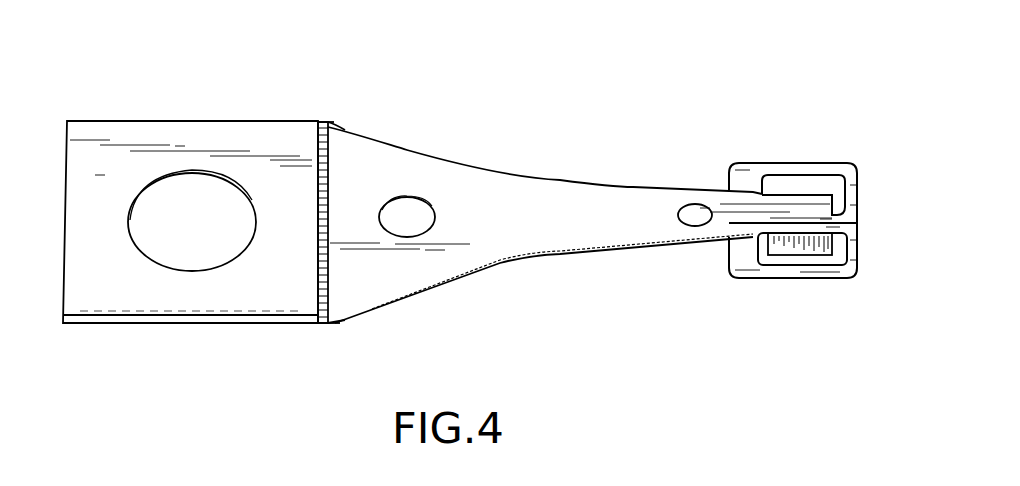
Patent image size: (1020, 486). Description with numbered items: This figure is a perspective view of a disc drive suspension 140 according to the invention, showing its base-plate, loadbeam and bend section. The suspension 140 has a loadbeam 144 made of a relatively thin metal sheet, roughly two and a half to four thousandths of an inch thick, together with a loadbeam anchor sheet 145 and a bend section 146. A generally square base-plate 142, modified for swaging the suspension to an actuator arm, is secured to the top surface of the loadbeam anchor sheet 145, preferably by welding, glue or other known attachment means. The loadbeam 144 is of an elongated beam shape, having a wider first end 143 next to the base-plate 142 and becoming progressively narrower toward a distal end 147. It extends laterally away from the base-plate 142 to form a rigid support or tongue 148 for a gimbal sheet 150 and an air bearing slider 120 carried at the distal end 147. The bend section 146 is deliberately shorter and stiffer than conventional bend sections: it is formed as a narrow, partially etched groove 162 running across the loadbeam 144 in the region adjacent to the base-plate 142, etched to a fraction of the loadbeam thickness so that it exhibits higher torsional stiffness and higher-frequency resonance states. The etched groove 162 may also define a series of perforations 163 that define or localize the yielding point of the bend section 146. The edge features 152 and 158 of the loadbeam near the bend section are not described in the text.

The suspension 140 is at (318, 83).
The base-plate 142 is at (122, 307).
The loadbeam anchor sheet 145 is at (215, 318).
The perforations 163 is at (318, 160).
The partially etched groove 162 is at (325, 130).
The bend section 146 is at (320, 327).
The first end 143 is at (328, 122).
The loadbeam 144 is at (432, 172).
The arm lower edge 152 is at (353, 303).
The arm lower corner 158 is at (333, 327).
The gimbal sheet 150 is at (752, 172).
The distal end 147 is at (857, 222).
The tongue 148 is at (728, 225).
The air bearing slider 120 is at (822, 243).